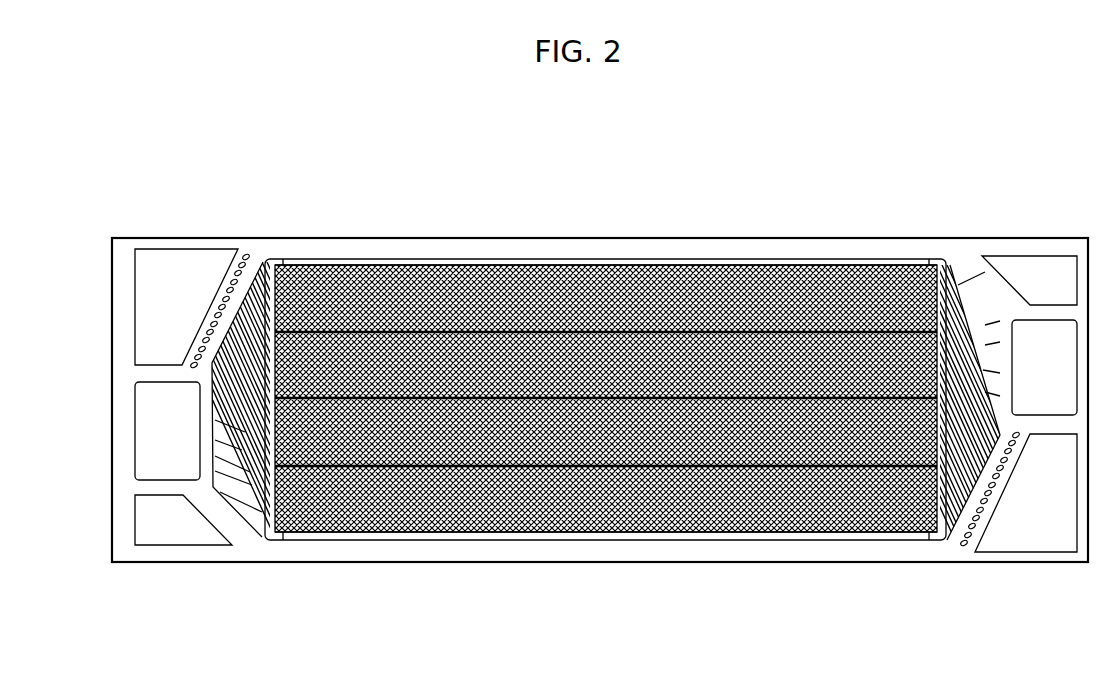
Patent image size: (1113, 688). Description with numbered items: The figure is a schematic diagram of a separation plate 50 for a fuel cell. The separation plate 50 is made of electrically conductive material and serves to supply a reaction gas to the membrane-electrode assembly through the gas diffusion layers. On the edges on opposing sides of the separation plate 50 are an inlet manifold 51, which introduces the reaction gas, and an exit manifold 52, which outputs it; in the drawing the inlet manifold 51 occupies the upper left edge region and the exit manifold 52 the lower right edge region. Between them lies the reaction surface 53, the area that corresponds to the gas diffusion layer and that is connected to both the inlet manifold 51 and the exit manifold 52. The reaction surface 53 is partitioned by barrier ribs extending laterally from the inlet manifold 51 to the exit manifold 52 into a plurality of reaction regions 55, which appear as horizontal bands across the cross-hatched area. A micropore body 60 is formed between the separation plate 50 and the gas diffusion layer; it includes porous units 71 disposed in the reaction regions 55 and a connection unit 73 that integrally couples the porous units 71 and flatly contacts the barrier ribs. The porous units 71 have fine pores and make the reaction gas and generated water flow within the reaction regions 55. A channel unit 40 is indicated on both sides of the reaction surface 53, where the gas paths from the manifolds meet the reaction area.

The separation plate 50 is at (577, 152).
The inlet manifold 51 is at (192, 249).
The exit manifold 52 is at (1019, 552).
The reaction surface 53 is at (622, 546).
The reaction region 55 is at (605, 300).
The micropore body 60 is at (367, 168).
The porous unit 71 is at (377, 256).
The connection unit 73 is at (458, 318).
The channel unit 40 is at (208, 408).